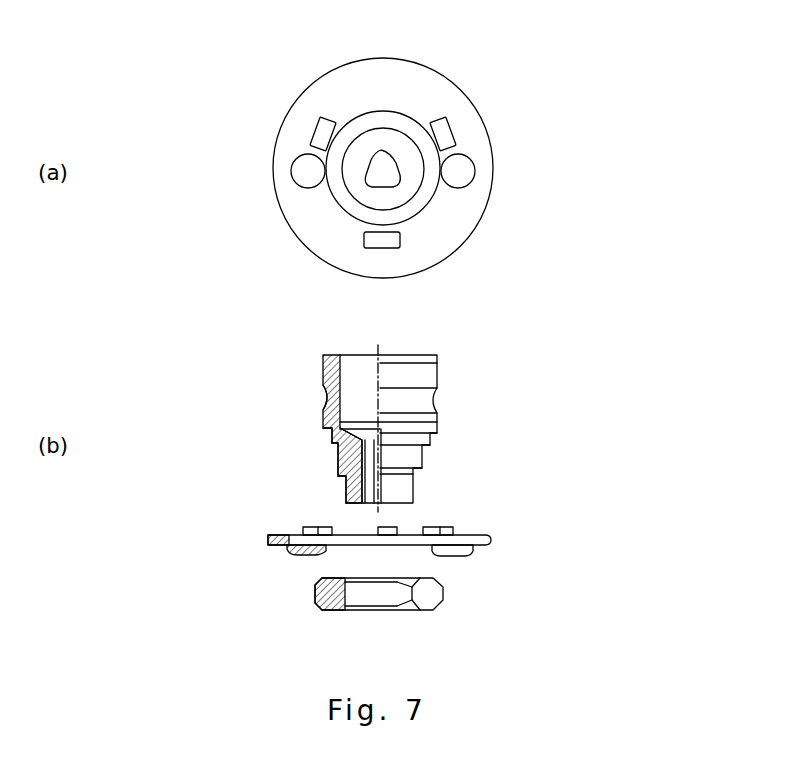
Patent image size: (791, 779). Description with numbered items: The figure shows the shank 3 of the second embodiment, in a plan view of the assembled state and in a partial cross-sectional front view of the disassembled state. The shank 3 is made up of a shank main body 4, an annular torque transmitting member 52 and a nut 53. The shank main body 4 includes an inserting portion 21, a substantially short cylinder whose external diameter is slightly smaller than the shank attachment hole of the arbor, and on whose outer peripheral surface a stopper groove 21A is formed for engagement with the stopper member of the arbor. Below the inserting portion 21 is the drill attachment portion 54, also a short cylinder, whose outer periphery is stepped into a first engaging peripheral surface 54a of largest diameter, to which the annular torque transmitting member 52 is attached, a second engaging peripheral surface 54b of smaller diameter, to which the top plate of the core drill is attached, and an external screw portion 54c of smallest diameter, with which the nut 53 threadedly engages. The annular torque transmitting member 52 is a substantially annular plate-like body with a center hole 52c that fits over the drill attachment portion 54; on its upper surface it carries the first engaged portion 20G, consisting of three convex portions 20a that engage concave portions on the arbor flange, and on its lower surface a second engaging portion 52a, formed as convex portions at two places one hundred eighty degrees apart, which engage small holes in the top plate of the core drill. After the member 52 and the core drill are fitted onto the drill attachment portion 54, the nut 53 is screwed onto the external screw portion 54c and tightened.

The shank 3 is at (278, 100).
The shank main body 4 is at (408, 117).
The inserting portion 21 is at (328, 378).
The stopper groove 21A is at (328, 400).
The first engaged portion 20G is at (445, 130).
The convex portion 20a is at (379, 326).
The annular torque transmitting member 52 is at (490, 142).
The second engaging portion 52a is at (303, 173).
The center hole 52c is at (333, 543).
The nut 53 is at (437, 595).
The drill attachment portion 54 is at (345, 465).
The first engaging peripheral surface 54a is at (330, 440).
The second engaging peripheral surface 54b is at (338, 459).
The external screw portion 54c is at (344, 492).